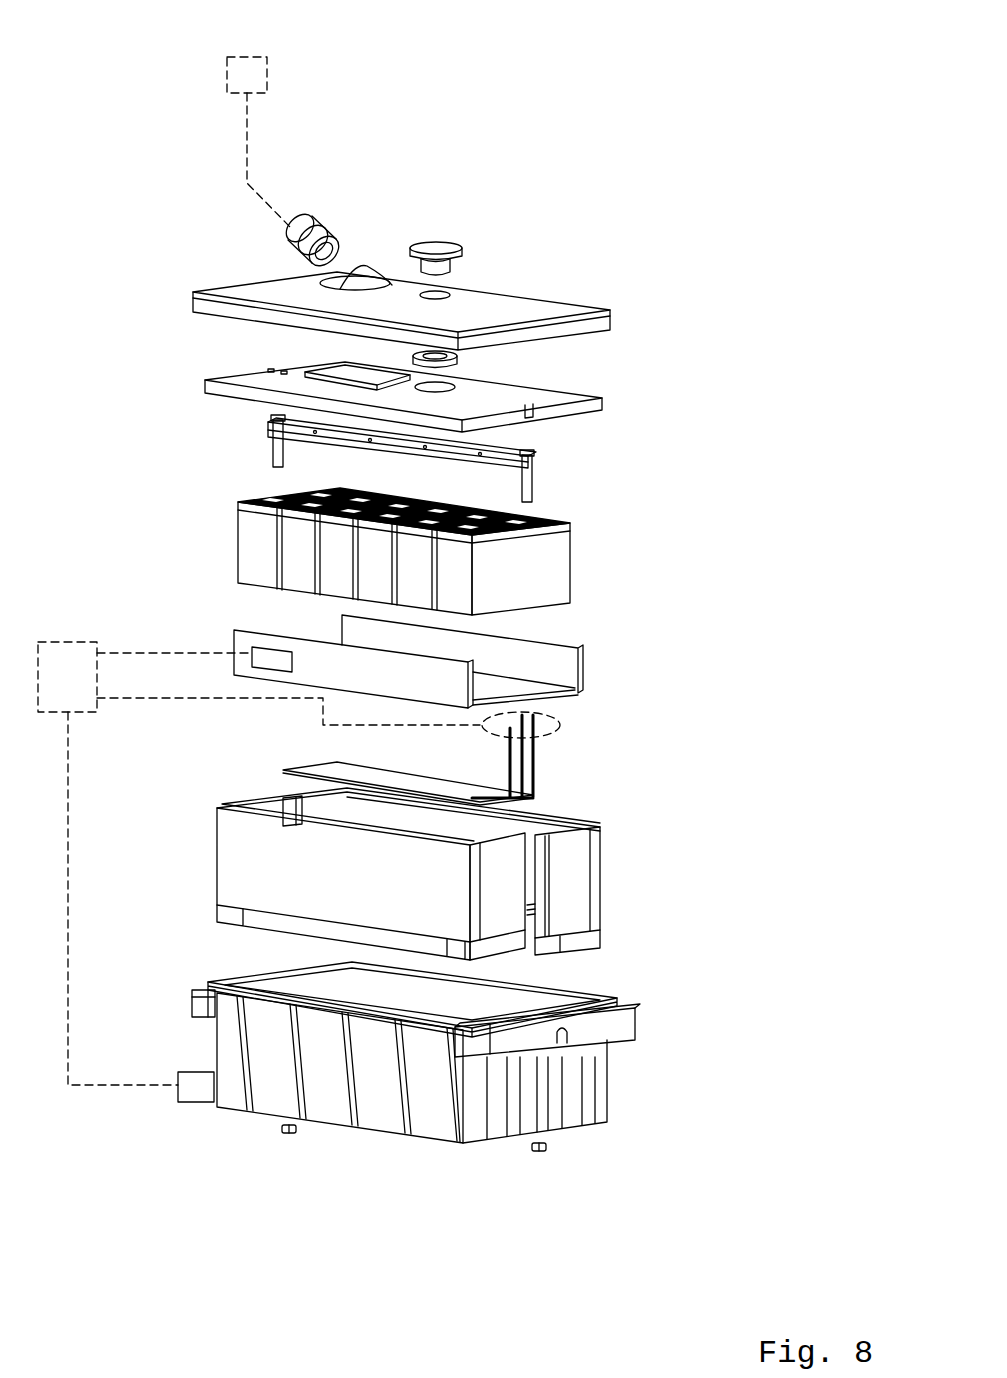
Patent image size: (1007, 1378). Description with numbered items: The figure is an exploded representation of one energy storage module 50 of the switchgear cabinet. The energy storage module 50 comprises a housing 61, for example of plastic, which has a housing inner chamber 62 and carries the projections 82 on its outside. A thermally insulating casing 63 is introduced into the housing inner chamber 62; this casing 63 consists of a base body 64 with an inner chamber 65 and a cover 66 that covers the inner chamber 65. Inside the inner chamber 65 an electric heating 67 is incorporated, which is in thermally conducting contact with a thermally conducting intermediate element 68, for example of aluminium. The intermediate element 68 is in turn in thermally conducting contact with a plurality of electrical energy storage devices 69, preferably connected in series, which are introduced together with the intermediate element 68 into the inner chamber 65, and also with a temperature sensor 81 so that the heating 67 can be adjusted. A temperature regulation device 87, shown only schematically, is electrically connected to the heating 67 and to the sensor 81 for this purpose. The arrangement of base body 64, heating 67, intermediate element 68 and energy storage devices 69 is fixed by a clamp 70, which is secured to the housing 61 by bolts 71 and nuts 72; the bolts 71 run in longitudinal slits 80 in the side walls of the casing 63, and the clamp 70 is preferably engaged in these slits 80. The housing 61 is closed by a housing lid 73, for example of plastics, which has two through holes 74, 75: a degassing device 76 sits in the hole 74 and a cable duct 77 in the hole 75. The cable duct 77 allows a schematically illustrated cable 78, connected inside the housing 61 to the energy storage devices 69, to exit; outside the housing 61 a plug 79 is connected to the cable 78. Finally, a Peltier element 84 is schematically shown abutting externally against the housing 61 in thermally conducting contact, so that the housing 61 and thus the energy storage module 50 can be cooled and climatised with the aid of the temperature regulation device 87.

The energy storage module 50 is at (76, 86).
The housing 61 is at (420, 1102).
The housing inner chamber 62 is at (500, 1002).
The thermally insulating casing 63 is at (415, 852).
The base body 64 is at (598, 902).
The inner chamber 65 is at (510, 827).
The cover 66 is at (593, 407).
The electric heating 67 is at (323, 767).
The thermally conducting intermediate element 68 is at (431, 654).
The electrical energy storage devices 69 is at (565, 570).
The clamp 70 is at (492, 451).
The bolts 71 is at (275, 448).
The nuts 72 is at (292, 1136).
The housing lid 73 is at (600, 322).
The through hole 74 is at (438, 296).
The through hole 75 is at (342, 283).
The degassing device 76 is at (428, 240).
The cable duct 77 is at (308, 220).
The cable 78 is at (262, 197).
The plug 79 is at (267, 75).
The longitudinal slits 80 is at (288, 800).
The temperature sensor 81 is at (260, 650).
The projections 82 is at (190, 1000).
The Peltier element 84 is at (190, 1093).
The temperature regulation device 87 is at (52, 642).